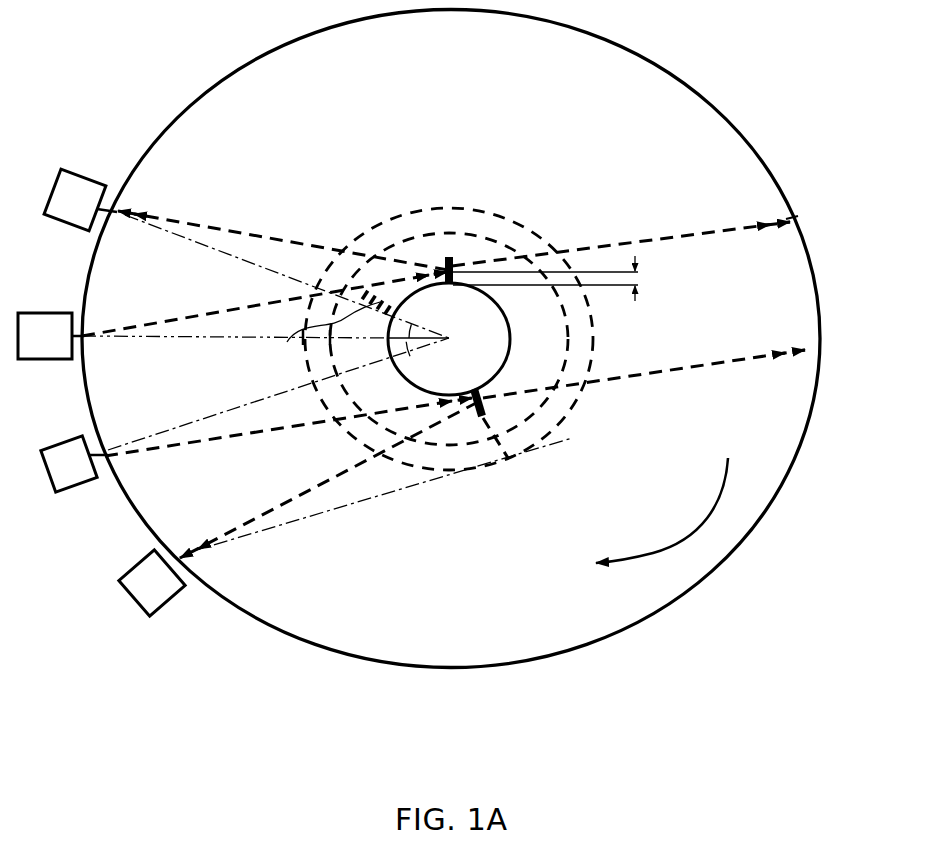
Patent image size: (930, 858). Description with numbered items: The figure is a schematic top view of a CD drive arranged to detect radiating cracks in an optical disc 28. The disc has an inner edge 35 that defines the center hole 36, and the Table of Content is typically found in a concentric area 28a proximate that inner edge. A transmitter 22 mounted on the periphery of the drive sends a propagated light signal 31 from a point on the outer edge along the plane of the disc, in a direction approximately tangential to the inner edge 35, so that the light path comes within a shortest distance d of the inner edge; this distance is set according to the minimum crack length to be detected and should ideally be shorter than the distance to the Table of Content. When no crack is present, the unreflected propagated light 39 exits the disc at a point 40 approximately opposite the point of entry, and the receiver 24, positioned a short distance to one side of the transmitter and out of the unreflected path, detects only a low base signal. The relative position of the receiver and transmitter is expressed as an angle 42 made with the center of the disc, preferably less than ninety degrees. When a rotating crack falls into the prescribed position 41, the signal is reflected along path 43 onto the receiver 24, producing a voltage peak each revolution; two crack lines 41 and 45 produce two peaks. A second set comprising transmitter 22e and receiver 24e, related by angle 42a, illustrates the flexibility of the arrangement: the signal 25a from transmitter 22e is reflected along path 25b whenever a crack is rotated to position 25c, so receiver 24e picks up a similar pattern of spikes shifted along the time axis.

The optical disc 28 is at (682, 92).
The concentric area 28a is at (586, 356).
The center hole 36 is at (487, 331).
The transmitter 22 is at (40, 345).
The receiver 24 is at (78, 186).
The second transmitter 22e is at (78, 472).
The second receiver 24e is at (168, 592).
The propagated light signal 31 is at (200, 312).
The reflected signal path 43 is at (237, 233).
The unreflected propagated light 39 is at (632, 242).
The exit point 40 is at (793, 217).
The prescribed position 41 is at (451, 257).
The inner edge 35 is at (507, 362).
The angle 42 is at (386, 349).
The angle 42a is at (393, 376).
The second crack line 45 is at (327, 328).
The signal 25a is at (152, 447).
The reflected path 25b is at (332, 490).
The crack position 25c is at (487, 406).
The shortest distance d is at (555, 278).